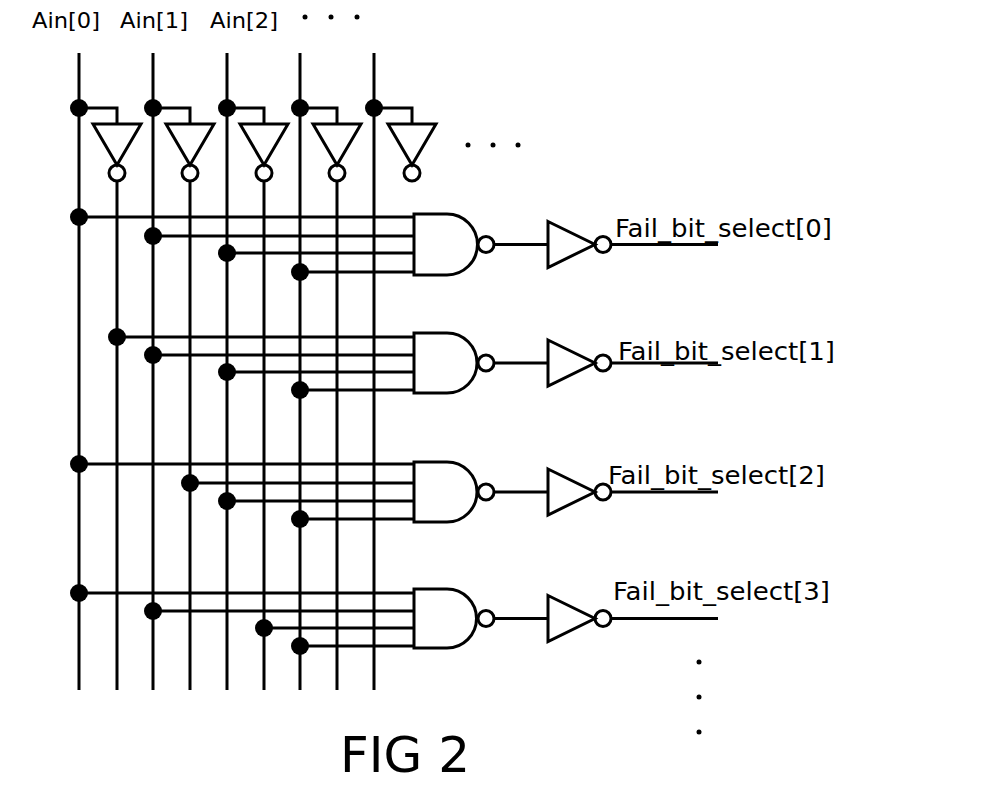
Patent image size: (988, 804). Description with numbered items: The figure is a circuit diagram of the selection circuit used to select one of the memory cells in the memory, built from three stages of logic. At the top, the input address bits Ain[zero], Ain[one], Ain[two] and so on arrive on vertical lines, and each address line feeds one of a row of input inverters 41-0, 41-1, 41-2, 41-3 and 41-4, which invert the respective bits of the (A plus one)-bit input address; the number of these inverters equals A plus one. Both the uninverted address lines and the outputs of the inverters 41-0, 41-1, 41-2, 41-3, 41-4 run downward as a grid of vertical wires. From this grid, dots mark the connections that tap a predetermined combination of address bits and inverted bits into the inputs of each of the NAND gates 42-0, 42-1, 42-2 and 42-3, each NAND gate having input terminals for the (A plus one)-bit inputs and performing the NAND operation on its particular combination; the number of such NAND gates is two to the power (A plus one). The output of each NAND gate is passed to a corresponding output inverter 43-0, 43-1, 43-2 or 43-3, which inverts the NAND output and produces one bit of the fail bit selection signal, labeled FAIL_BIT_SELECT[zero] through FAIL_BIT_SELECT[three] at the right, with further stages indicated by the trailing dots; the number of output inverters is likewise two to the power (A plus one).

The inverter 41-0 is at (134, 97).
The inverter 41-1 is at (203, 120).
The inverter 41-2 is at (283, 98).
The inverter 41-3 is at (340, 122).
The inverter 41-4 is at (422, 122).
The NAND gate 42-0 is at (456, 238).
The NAND gate 42-1 is at (445, 342).
The NAND gate 42-2 is at (443, 478).
The NAND gate 42-3 is at (443, 604).
The inverter 43-0 is at (572, 233).
The inverter 43-1 is at (570, 350).
The inverter 43-2 is at (570, 477).
The inverter 43-3 is at (570, 600).